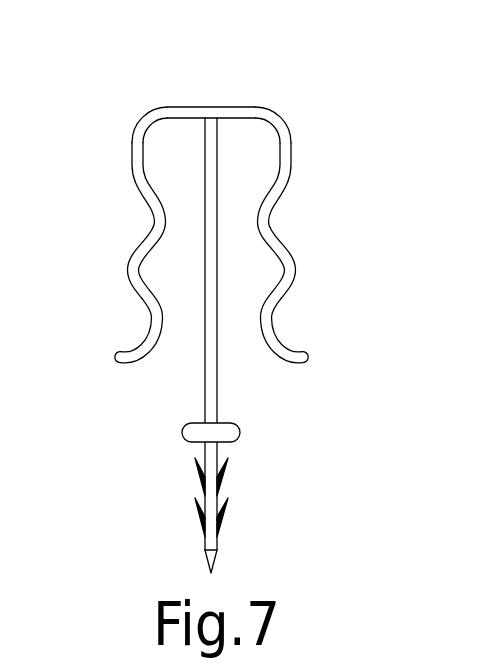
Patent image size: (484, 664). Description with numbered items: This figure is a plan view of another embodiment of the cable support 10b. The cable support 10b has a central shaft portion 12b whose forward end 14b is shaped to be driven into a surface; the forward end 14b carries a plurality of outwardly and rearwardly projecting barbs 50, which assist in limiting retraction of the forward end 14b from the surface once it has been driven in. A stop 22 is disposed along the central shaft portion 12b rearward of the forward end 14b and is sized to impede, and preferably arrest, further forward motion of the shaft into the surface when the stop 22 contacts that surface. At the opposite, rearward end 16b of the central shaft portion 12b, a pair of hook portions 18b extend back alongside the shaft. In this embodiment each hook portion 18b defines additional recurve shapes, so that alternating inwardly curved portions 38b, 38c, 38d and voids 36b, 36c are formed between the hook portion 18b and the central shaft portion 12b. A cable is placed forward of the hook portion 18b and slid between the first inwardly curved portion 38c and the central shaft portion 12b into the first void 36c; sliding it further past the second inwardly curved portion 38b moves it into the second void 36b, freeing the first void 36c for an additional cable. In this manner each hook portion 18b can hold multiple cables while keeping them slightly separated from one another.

The cable support 10b is at (97, 127).
The central shaft portion 12b is at (243, 391).
The forward end 14b is at (243, 523).
The rearward end 16b is at (221, 84).
The hook portion 18b is at (157, 107).
The stop 22 is at (191, 431).
The second void 36b is at (192, 163).
The first void 36c is at (195, 283).
The second inwardly curved portion 38b is at (157, 223).
The first inwardly curved portion 38c is at (148, 332).
The inwardly curved portion 38d is at (269, 216).
The barbs 50 is at (197, 471).